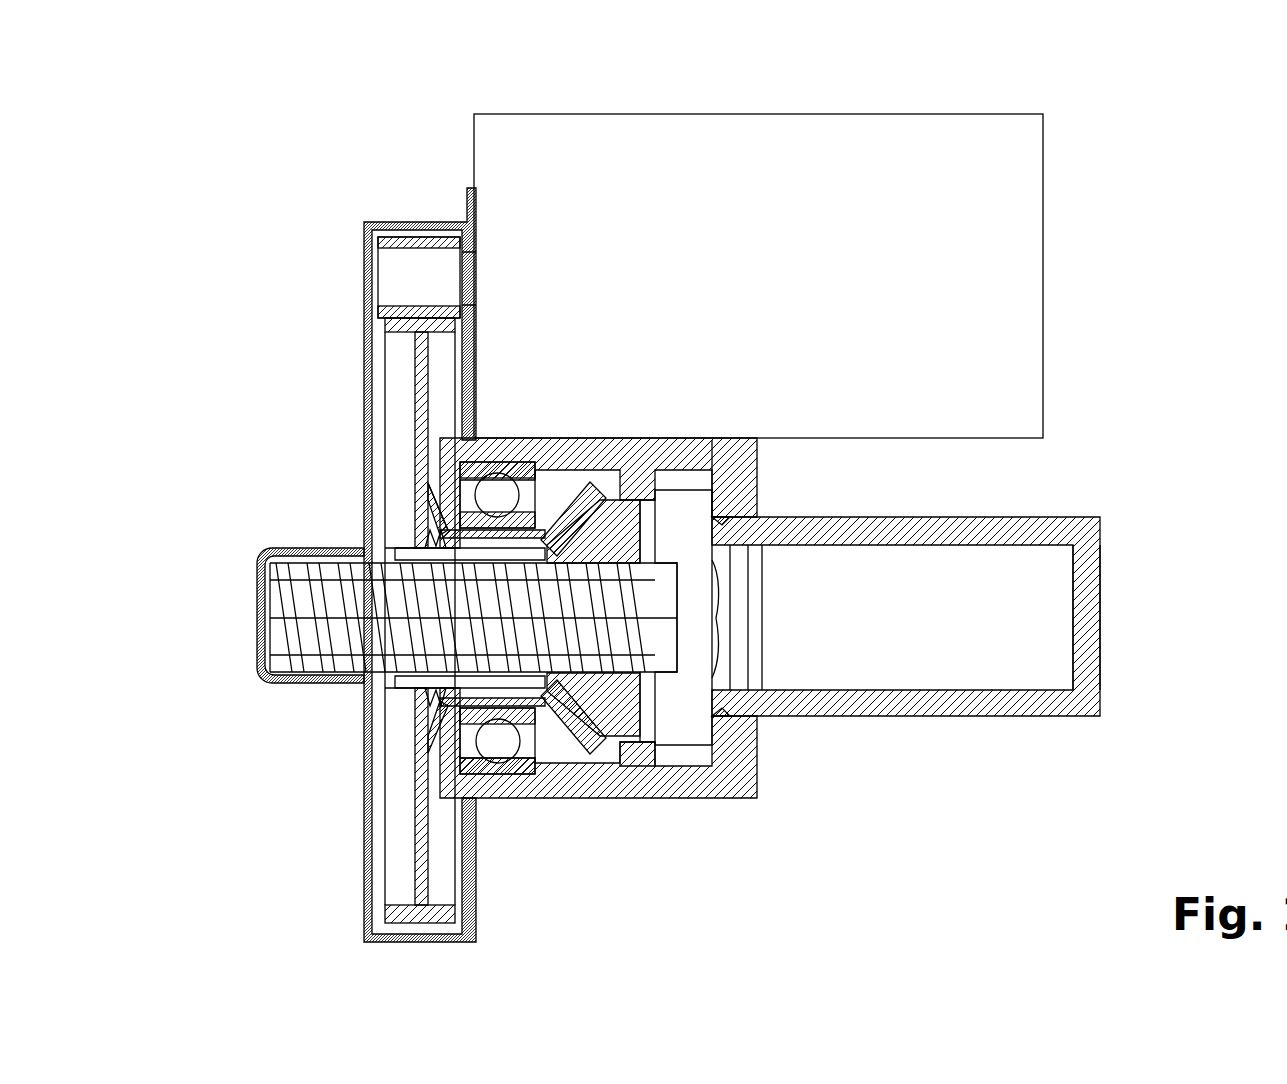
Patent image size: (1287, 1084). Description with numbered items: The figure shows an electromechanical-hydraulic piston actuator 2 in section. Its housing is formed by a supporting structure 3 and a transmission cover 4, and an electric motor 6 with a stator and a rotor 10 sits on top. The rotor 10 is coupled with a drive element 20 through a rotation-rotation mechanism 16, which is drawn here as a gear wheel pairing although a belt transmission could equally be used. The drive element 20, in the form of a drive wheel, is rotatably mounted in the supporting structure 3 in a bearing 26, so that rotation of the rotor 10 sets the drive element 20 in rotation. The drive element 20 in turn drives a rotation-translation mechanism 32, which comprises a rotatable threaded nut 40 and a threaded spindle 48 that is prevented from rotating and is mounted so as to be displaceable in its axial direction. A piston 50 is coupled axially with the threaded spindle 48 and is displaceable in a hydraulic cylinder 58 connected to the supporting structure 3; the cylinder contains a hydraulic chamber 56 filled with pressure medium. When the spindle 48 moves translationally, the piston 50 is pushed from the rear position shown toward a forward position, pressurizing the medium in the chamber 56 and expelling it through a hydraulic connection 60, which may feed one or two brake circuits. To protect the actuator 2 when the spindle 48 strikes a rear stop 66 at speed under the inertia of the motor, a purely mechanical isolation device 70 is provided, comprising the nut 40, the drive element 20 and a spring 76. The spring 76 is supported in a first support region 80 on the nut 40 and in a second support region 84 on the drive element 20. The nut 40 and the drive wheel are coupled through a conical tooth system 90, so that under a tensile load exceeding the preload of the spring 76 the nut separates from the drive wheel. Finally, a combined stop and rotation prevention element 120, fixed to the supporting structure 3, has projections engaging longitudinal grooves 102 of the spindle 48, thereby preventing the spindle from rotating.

The electromechanical-hydraulic piston actuator 2 is at (1095, 132).
The supporting structure 3 is at (724, 778).
The transmission cover 4 is at (364, 318).
The electric motor 6 is at (637, 185).
The rotor 10 is at (422, 258).
The rotation-rotation mechanism 16 is at (388, 208).
The drive element 20 is at (413, 375).
The bearing 26 is at (510, 750).
The rotation-translation mechanism 32 is at (663, 768).
The threaded nut 40 is at (628, 758).
The threaded spindle 48 is at (318, 688).
The piston 50 is at (742, 650).
The hydraulic chamber 56 is at (951, 655).
The hydraulic cylinder 58 is at (860, 702).
The hydraulic connection 60 is at (1088, 562).
The rear stop 66 is at (226, 583).
The isolation device 70 is at (738, 490).
The spring 76 is at (415, 520).
The first support region 80 is at (452, 535).
The second support region 84 is at (400, 549).
The conical tooth system 90 is at (568, 742).
The longitudinal grooves 102 is at (340, 670).
The combined stop and rotation prevention element 120 is at (697, 506).